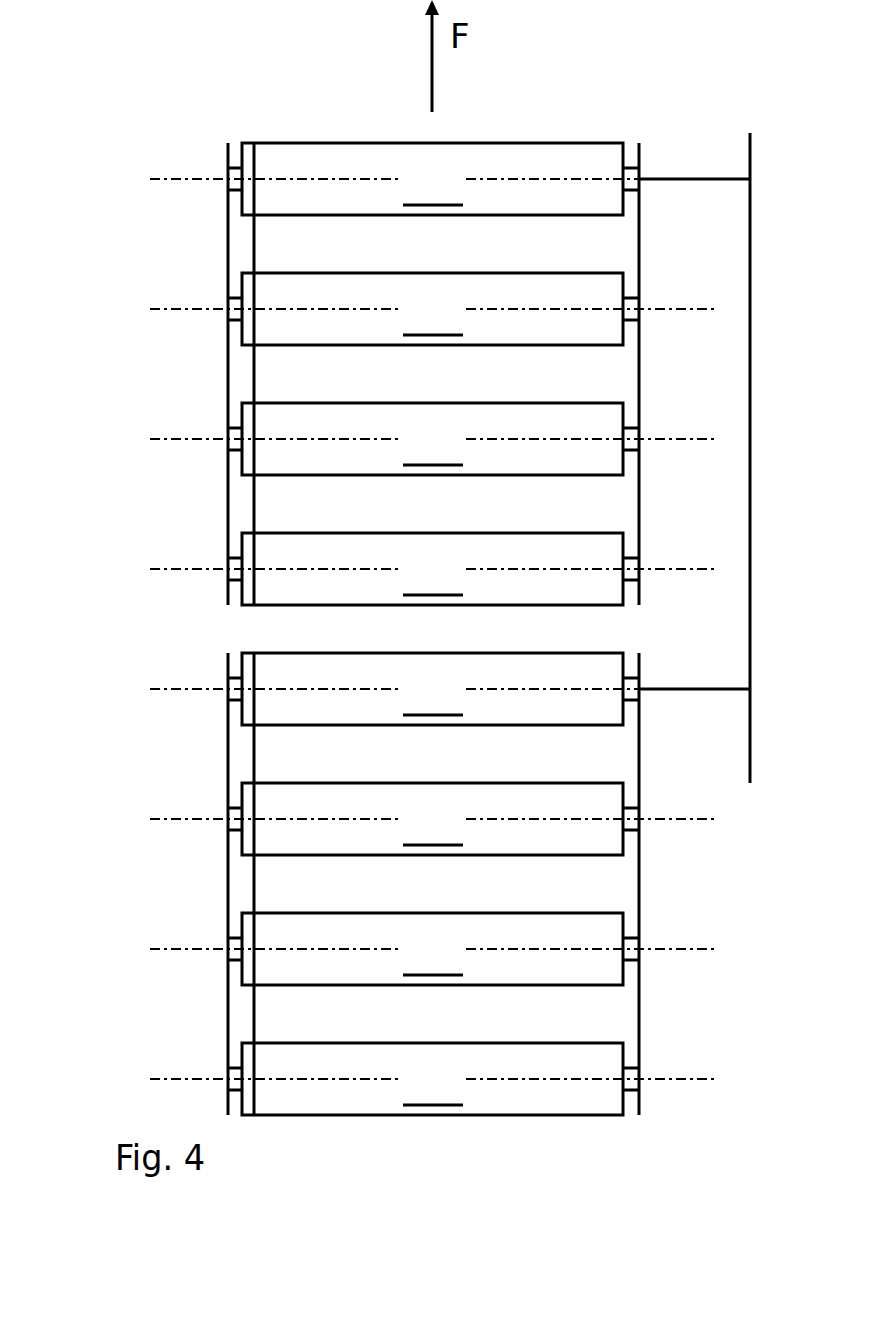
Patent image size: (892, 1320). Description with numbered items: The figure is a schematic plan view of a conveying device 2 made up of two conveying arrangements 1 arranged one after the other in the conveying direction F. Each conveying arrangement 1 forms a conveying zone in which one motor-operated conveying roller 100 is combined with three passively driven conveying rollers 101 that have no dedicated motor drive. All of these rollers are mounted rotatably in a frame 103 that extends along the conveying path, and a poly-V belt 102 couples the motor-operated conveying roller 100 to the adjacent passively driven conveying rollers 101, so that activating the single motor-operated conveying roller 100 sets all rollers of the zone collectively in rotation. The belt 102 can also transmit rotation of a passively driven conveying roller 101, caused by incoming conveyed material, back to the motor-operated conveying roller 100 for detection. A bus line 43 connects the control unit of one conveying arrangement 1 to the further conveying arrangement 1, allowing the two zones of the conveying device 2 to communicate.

The conveying arrangement 1 is at (182, 154).
The conveying device 2 is at (152, 503).
The bus line 43 is at (752, 762).
The motor-operated conveying roller 100 is at (450, 430).
The passively driven conveying rollers 101 is at (434, 690).
The poly-V belt 102 is at (254, 242).
The frame 103 is at (228, 366).